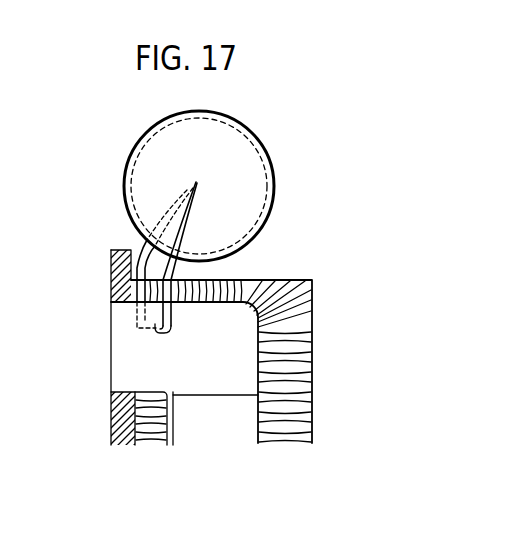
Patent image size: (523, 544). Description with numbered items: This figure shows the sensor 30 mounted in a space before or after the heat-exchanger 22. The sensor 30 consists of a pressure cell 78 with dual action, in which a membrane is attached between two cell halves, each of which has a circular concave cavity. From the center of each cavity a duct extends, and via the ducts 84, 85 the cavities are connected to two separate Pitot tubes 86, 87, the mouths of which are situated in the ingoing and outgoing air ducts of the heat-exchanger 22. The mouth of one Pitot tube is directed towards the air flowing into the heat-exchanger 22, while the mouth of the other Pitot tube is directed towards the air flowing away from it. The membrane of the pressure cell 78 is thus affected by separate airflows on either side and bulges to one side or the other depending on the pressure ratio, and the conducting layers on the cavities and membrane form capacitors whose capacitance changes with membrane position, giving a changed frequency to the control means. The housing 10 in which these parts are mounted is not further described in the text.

The housing 10 is at (320, 382).
The heat-exchanger 22 is at (226, 440).
The sensor 30 is at (262, 133).
The pressure cell 78 is at (213, 183).
The duct 84 is at (143, 243).
The duct 85 is at (192, 202).
The Pitot tube 86 is at (145, 328).
The Pitot tube 87 is at (170, 326).